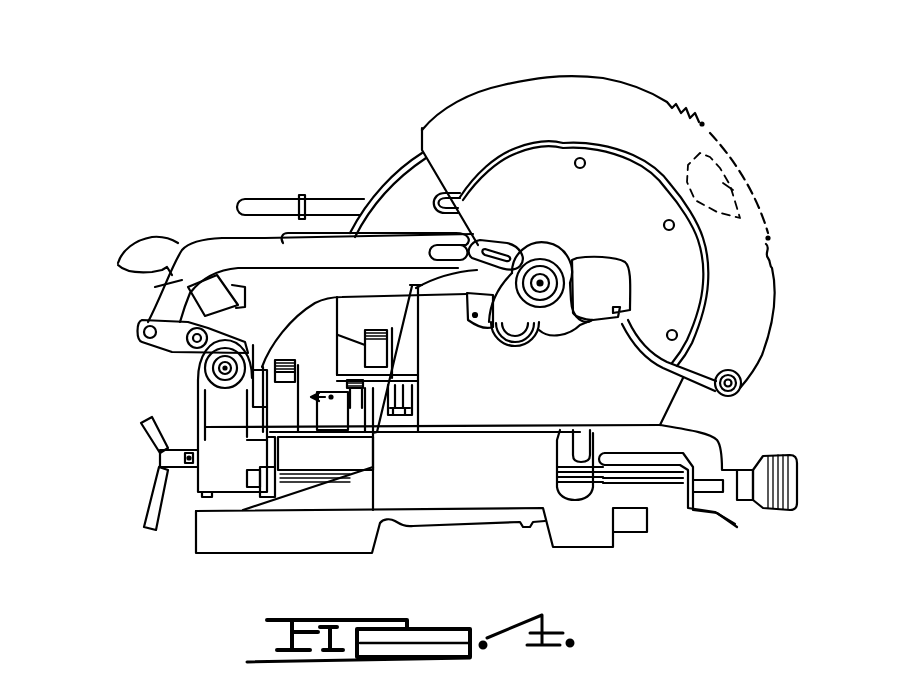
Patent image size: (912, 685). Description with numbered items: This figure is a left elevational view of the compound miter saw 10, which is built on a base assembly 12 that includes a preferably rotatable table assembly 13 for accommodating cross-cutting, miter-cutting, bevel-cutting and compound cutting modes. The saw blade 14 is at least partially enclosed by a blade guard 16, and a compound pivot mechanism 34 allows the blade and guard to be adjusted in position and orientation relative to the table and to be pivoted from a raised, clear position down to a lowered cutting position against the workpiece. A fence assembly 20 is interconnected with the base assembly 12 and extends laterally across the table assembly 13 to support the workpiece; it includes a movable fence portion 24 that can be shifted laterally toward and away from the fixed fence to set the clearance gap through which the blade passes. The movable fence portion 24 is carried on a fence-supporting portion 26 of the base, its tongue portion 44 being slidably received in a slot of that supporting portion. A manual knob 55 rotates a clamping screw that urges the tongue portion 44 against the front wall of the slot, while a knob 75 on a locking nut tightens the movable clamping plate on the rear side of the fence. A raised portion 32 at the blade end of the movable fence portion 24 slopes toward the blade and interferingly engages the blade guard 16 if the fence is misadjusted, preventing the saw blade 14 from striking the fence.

The compound miter saw 10 is at (410, 88).
The base assembly 12 is at (449, 488).
The table assembly 13 is at (543, 428).
The saw blade 14 is at (743, 176).
The blade guard 16 is at (598, 78).
The fence assembly 20 is at (430, 358).
The movable fence portion 24 is at (412, 370).
The fence-supporting portion 26 is at (390, 427).
The raised portion 32 is at (487, 243).
The compound pivot mechanism 34 is at (185, 374).
The tongue portion 44 is at (402, 412).
The manual knob 55 is at (355, 415).
The knob 75 is at (372, 353).